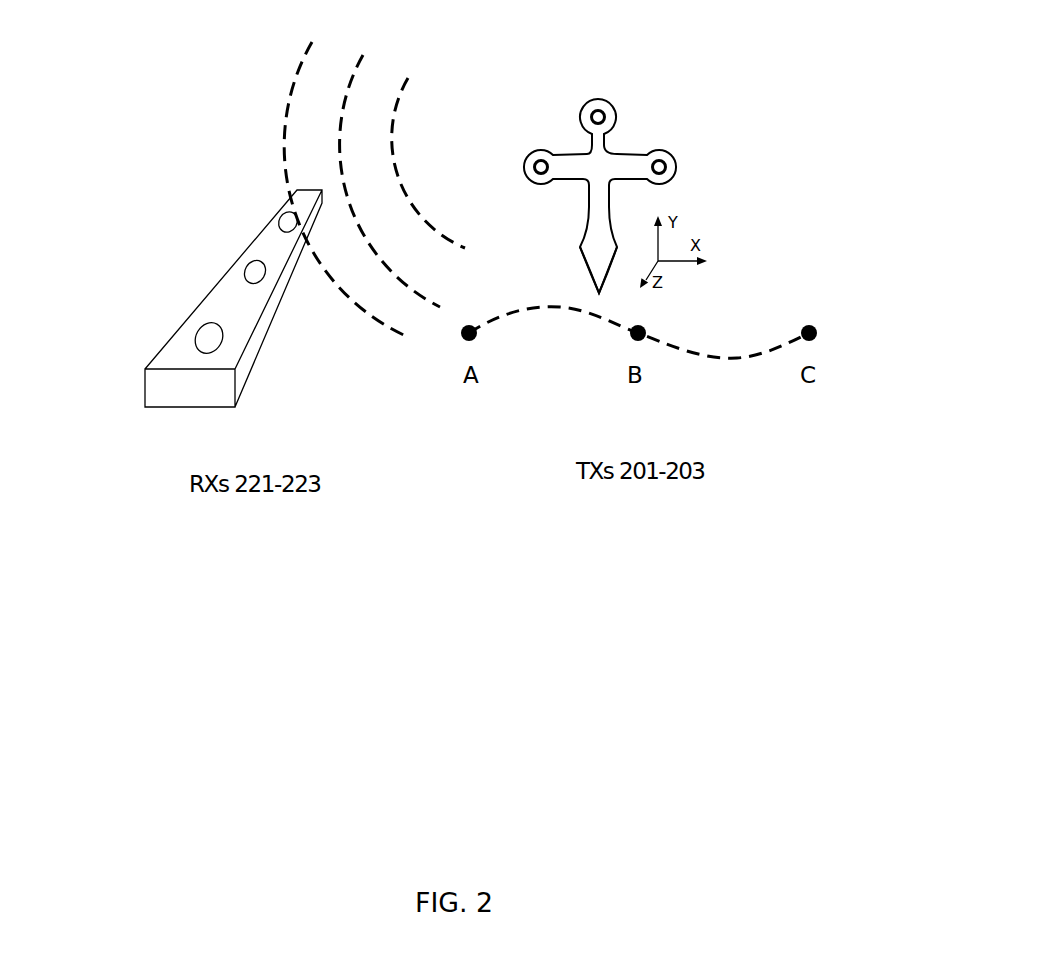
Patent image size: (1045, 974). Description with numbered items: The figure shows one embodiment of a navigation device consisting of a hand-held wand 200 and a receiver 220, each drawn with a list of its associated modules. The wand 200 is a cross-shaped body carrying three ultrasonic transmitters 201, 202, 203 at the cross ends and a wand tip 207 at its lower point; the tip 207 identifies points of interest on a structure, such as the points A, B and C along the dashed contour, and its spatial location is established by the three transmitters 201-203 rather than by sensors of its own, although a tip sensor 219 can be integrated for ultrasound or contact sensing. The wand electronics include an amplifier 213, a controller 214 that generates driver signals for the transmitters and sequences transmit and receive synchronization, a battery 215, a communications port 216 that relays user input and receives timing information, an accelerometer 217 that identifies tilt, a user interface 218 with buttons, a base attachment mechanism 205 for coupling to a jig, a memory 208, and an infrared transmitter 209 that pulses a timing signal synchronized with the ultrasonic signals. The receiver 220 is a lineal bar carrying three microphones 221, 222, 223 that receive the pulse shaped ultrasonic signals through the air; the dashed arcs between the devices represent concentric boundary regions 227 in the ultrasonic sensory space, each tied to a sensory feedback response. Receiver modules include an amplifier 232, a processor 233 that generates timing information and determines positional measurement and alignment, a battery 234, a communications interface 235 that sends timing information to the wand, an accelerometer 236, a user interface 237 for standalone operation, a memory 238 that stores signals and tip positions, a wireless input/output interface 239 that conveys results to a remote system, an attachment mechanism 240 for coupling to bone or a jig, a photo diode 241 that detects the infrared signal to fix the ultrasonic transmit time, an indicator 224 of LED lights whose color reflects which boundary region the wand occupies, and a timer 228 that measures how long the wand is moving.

The wand 200 is at (698, 82).
The ultrasonic transmitter 201 is at (597, 108).
The ultrasonic transmitter 202 is at (662, 157).
The ultrasonic transmitter 203 is at (540, 157).
The wand tip 207 is at (589, 285).
The receiver 220 is at (100, 414).
The microphone 221 is at (198, 332).
The microphone 222 is at (242, 270).
The microphone 223 is at (277, 213).
The concentric boundary region 227 is at (285, 108).
The amplifier 232 is at (275, 511).
The processor 233 is at (227, 539).
The battery 234 is at (247, 567).
The communications interface 235 is at (193, 594).
The accelerometer 236 is at (197, 622).
The user interface 237 is at (200, 649).
The memory 238 is at (248, 677).
The wireless communication interface 239 is at (222, 705).
The attachment mechanism 240 is at (219, 732).
The photo diode 241 is at (220, 760).
The indicator 224 is at (237, 787).
The timer 228 is at (264, 815).
The amplifier 213 is at (659, 499).
The controller 214 is at (606, 526).
The battery 215 is at (631, 554).
The communications port 216 is at (577, 581).
The accelerometer 217 is at (581, 609).
The user interface 218 is at (584, 636).
The tip sensor 219 is at (614, 664).
The base attachment mechanism 205 is at (572, 691).
The memory 208 is at (632, 719).
The infrared transmitter 209 is at (595, 746).